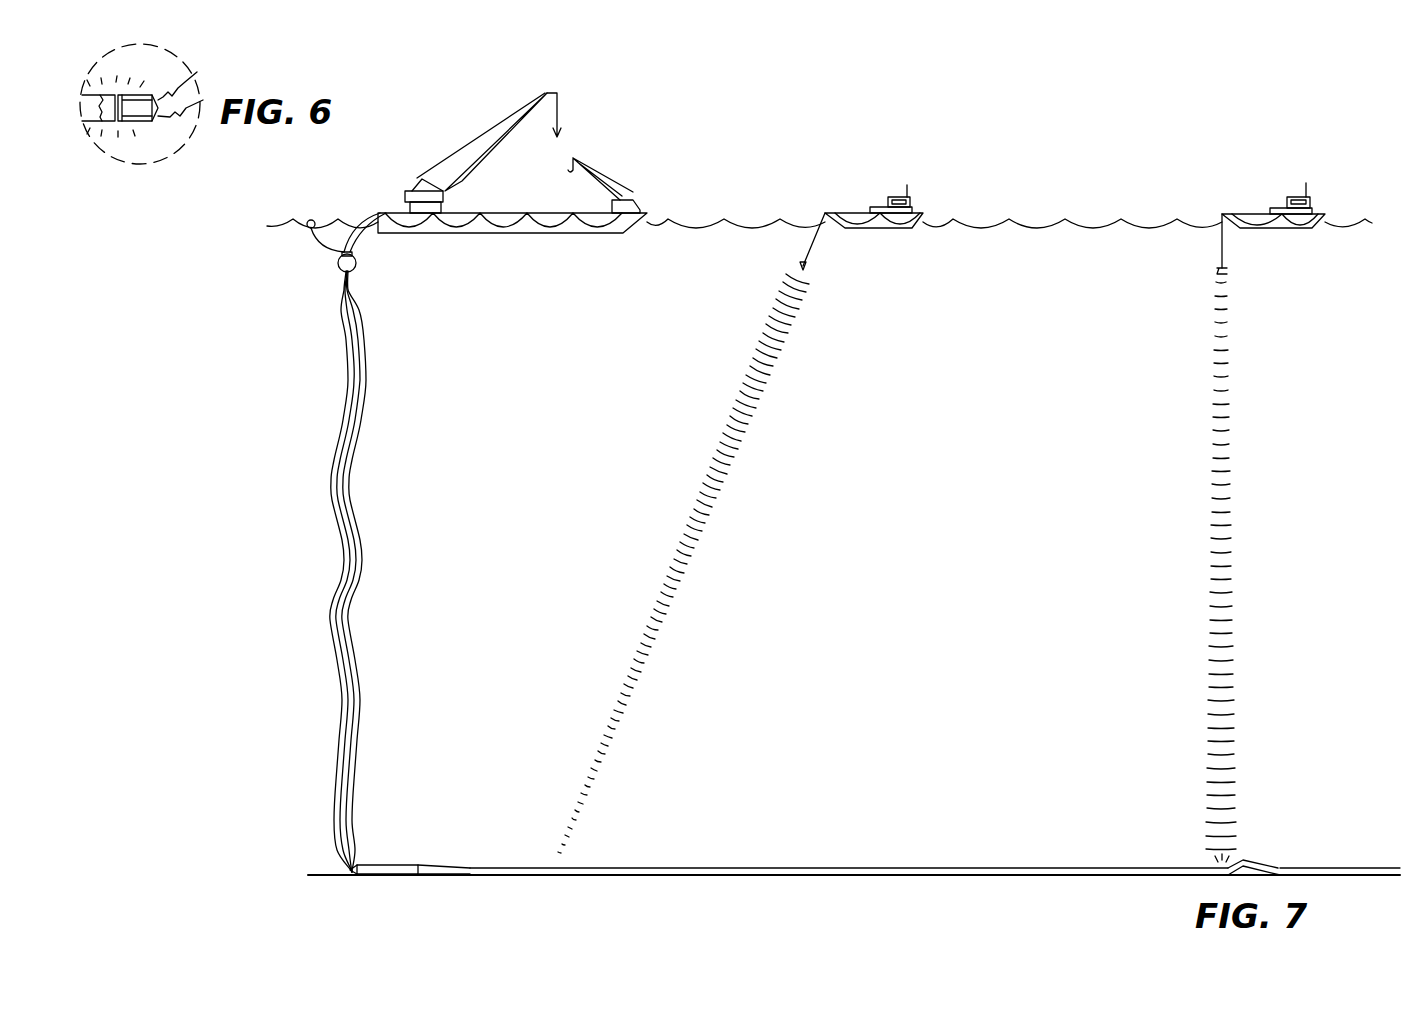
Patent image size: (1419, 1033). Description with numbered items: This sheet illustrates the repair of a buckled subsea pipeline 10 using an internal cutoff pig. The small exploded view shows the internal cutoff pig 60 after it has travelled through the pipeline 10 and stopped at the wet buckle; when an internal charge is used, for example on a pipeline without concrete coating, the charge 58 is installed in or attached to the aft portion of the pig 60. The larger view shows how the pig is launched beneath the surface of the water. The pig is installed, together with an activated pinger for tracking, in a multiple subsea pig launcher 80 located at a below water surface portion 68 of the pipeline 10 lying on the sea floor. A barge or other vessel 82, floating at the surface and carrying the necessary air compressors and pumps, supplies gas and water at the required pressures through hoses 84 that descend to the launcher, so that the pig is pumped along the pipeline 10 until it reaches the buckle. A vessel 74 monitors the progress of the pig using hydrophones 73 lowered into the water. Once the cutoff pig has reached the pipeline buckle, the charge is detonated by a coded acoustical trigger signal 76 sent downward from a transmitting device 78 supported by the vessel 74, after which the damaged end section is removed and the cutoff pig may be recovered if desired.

In FIG. 6, the pipeline 10 is at (86, 95).
In FIG. 7, the pipeline 10 is at (662, 868).
In FIG. 6, the charge 58 is at (120, 121).
In FIG. 6, the internal cutoff pig 60 is at (140, 103).
In FIG. 7, the below water surface portion of the pipeline 68 is at (372, 866).
In FIG. 7, the hydrophones 73 is at (812, 266).
In FIG. 7, the vessel 74 is at (923, 213).
In FIG. 7, the coded acoustical trigger signal 76 is at (1223, 477).
In FIG. 7, the transmitting device 78 is at (1230, 270).
In FIG. 7, the multiple subsea pig launcher 80 is at (420, 866).
In FIG. 7, the barge or other vessel 82 is at (565, 232).
In FIG. 7, the hoses 84 is at (358, 547).